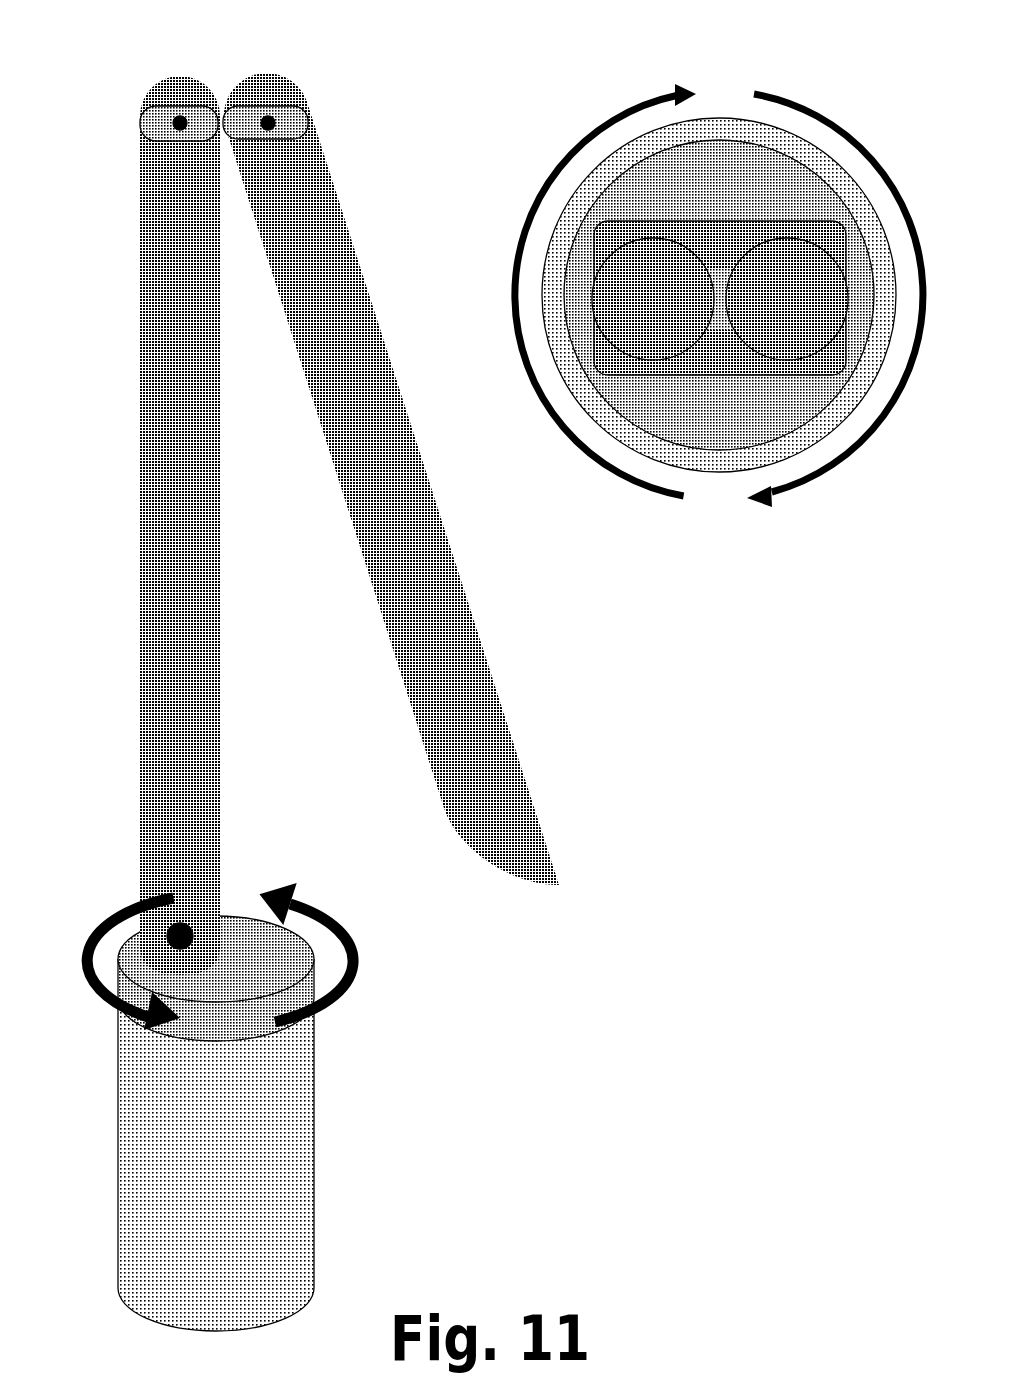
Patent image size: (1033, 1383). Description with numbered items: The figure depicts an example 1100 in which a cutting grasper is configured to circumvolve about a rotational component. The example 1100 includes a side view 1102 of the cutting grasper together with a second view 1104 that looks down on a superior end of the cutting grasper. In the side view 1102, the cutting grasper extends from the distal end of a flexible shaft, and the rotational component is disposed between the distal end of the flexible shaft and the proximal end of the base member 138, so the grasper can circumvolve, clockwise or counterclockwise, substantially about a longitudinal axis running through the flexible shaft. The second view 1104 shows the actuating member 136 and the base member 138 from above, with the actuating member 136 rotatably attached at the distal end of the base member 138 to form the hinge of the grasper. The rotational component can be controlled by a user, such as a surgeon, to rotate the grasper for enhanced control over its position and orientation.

The example 1100 is at (138, 20).
The side view 1102 is at (112, 86).
The second view 1104 is at (567, 87).
The actuating member 136 is at (640, 293).
The base member 138 is at (779, 292).